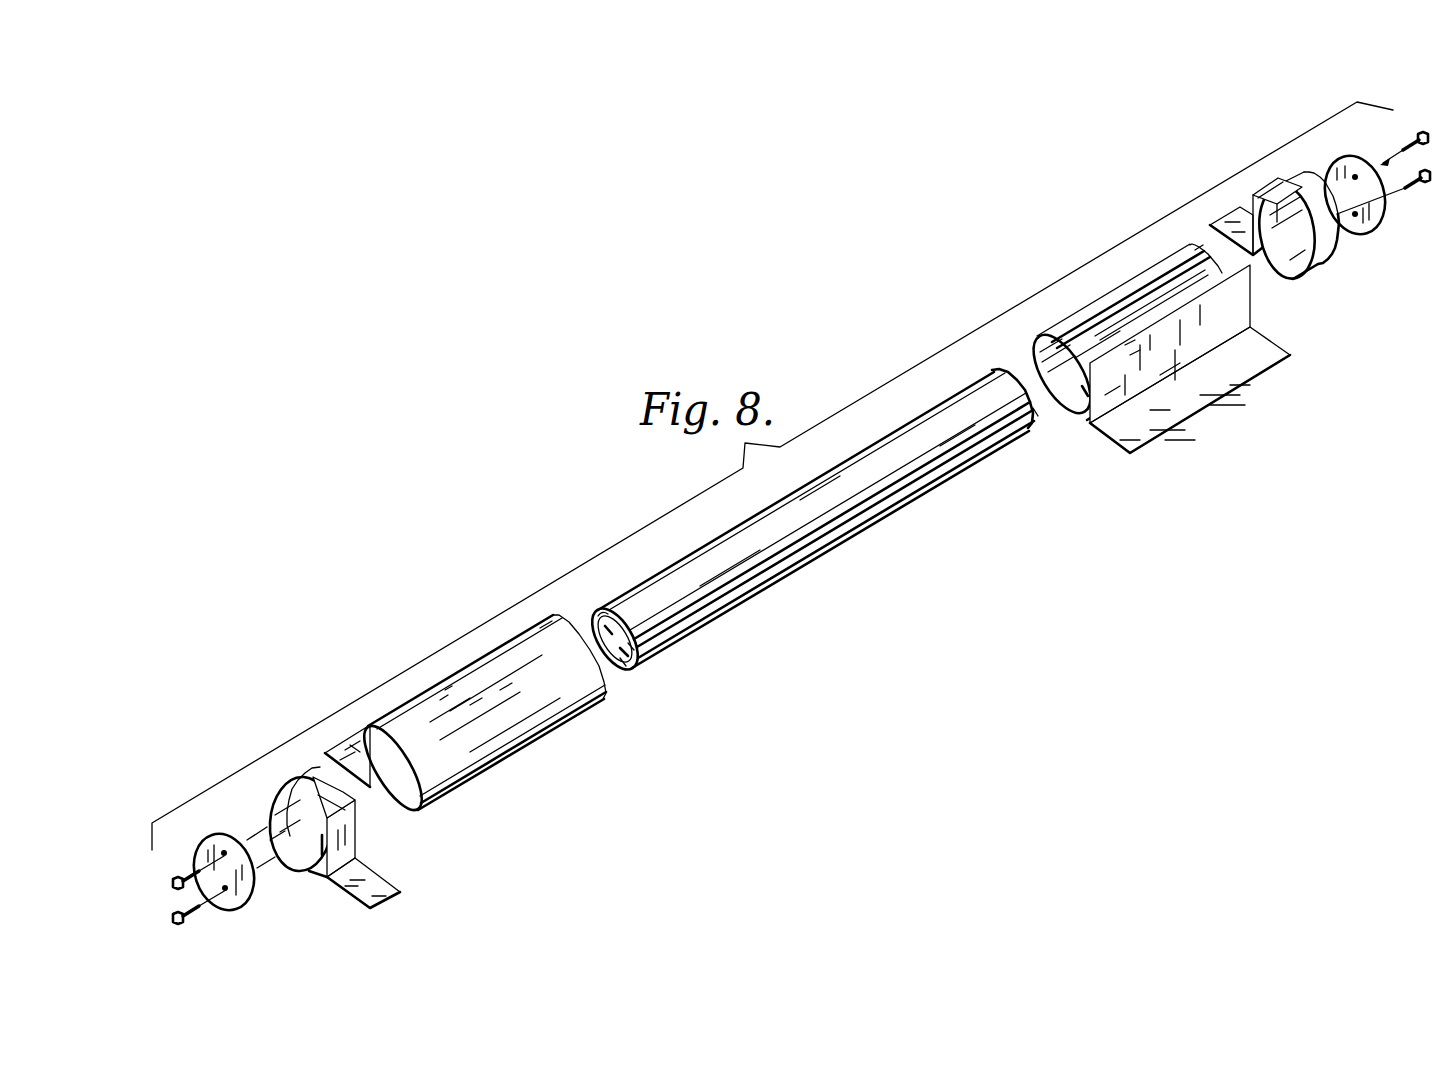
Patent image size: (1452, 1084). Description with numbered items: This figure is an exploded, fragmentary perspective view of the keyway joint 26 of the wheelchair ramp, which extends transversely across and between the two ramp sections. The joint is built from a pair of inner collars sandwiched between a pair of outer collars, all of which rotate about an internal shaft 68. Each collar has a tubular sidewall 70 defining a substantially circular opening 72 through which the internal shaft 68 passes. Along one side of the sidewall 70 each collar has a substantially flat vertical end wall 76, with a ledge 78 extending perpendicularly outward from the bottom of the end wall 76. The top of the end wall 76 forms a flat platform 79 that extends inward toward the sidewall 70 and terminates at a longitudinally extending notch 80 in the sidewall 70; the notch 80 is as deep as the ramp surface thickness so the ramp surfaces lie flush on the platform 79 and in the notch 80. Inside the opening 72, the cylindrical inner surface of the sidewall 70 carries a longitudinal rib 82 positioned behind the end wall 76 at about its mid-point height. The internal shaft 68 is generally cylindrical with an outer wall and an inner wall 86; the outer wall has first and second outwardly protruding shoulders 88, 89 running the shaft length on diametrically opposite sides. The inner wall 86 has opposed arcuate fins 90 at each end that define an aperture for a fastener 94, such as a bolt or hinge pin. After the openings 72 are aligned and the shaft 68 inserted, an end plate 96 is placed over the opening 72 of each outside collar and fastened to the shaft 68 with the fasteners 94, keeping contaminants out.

The keyway joint 26 is at (805, 228).
The internal shaft 68 is at (882, 545).
The tubular sidewall 70 is at (516, 732).
The circular opening 72 is at (268, 822).
The end wall 76 is at (362, 742).
The ledge 78 is at (395, 892).
The platform 79 is at (455, 678).
The notch 80 is at (540, 627).
The longitudinal rib 82 is at (322, 858).
The inner wall 86 is at (607, 612).
The first shoulder 88 is at (600, 618).
The second shoulder 89 is at (632, 648).
The fins 90 is at (626, 668).
The fastener 94 is at (172, 919).
The end plate 96 is at (230, 898).